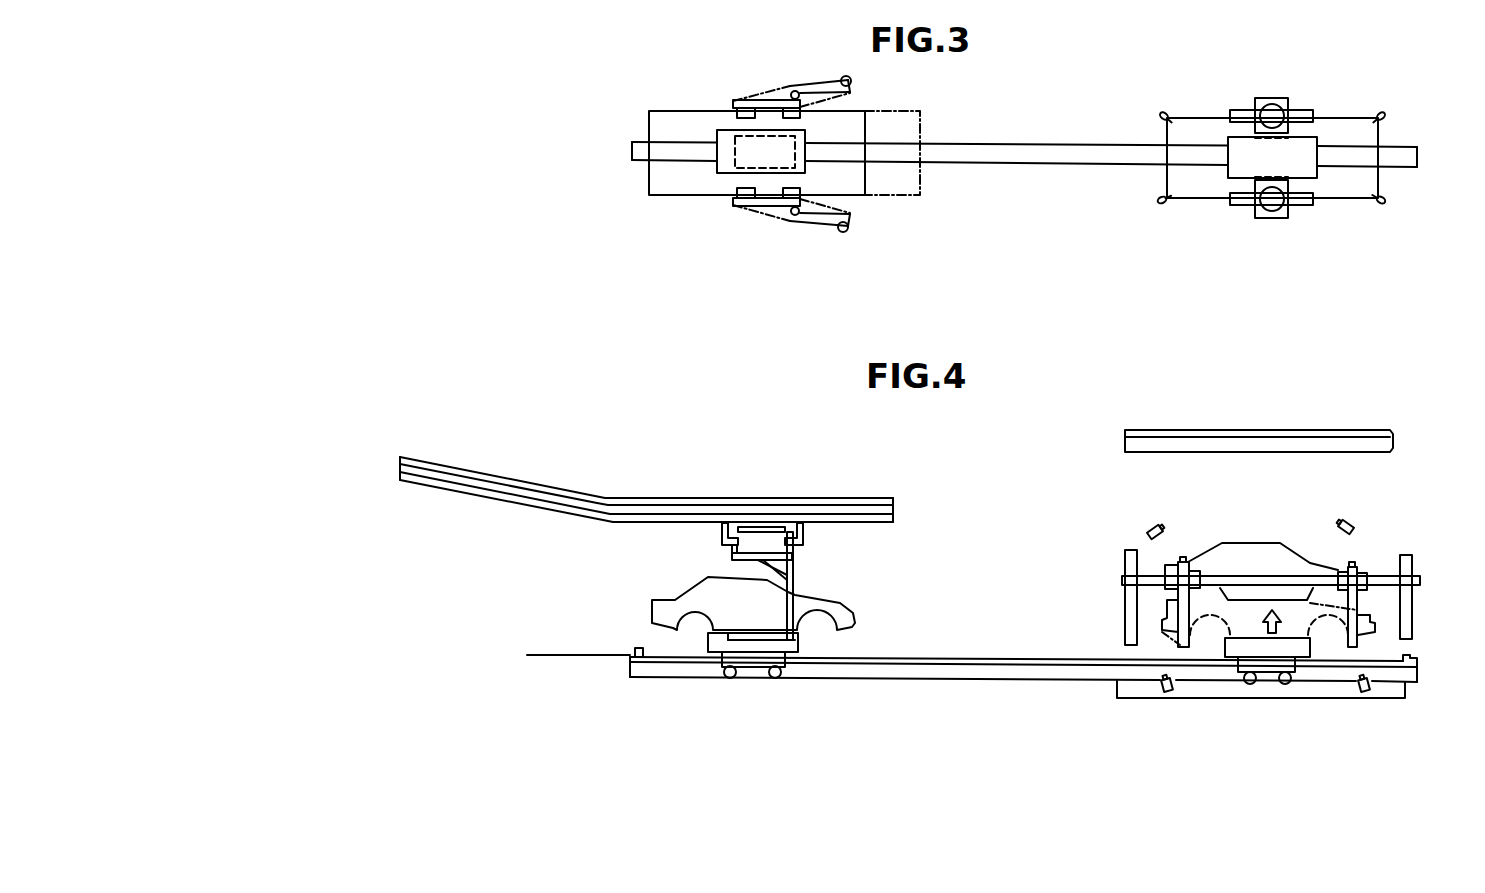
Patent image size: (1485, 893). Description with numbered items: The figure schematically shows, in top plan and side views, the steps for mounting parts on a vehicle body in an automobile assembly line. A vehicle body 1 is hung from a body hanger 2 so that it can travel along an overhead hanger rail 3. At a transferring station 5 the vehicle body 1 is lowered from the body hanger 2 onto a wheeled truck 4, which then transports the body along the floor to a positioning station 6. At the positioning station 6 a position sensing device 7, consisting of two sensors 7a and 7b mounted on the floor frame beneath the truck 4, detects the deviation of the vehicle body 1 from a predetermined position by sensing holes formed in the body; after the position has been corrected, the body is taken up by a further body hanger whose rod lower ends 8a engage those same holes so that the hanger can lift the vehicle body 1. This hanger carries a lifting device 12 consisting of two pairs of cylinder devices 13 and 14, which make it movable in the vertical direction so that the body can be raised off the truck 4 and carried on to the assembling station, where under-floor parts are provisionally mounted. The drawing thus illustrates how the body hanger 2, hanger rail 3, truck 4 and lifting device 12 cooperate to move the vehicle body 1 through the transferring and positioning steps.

In FIG. 4, the vehicle body 1 is at (825, 604).
In FIG. 3, the body hanger 2 is at (764, 100).
In FIG. 4, the body hanger 2 is at (795, 553).
In FIG. 4, the overhead hanger rail 3 is at (760, 506).
In FIG. 3, the truck 4 is at (722, 168).
In FIG. 4, the truck 4 is at (781, 665).
In FIG. 3, the transferring station 5 is at (784, 179).
In FIG. 4, the transferring station 5 is at (685, 581).
In FIG. 3, the positioning station 6 is at (1272, 116).
In FIG. 4, the positioning station 6 is at (1292, 605).
In FIG. 3, the position sensing device 7 is at (1344, 118).
In FIG. 4, the position sensing device 7 is at (1275, 712).
In FIG. 4, the sensor 7a is at (1367, 700).
In FIG. 4, the sensor 7b is at (1167, 700).
In FIG. 4, the lower end of the rod of the body hanger 8a is at (1178, 645).
In FIG. 4, the lifting device 12 is at (1266, 529).
In FIG. 4, the cylinder device 13 is at (1329, 548).
In FIG. 4, the cylinder device 14 is at (1189, 563).